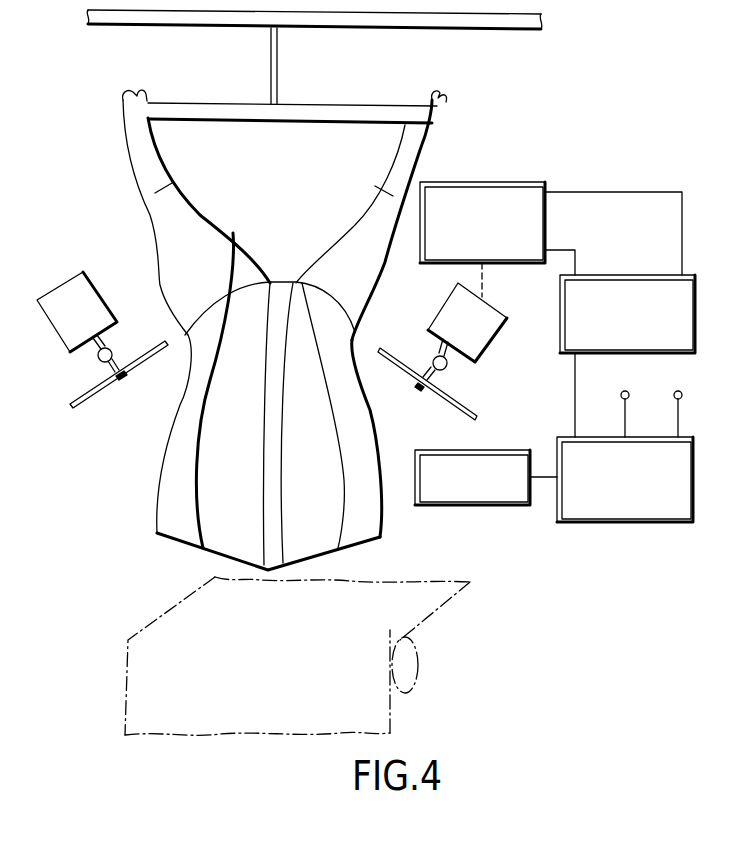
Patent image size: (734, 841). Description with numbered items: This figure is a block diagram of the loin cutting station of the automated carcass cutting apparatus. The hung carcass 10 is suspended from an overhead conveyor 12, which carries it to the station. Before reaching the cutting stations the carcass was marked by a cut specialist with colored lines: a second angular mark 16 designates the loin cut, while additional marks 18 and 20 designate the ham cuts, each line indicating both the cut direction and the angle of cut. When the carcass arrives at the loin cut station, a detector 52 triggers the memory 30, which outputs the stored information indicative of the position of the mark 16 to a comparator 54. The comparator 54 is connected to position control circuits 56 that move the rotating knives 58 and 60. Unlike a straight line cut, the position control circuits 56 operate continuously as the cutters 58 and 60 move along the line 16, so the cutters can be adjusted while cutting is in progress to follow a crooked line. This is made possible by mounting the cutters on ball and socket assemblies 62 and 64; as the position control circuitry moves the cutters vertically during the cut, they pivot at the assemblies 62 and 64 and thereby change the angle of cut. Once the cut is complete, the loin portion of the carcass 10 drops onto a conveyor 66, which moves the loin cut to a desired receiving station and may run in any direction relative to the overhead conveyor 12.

The hung carcass 10 is at (150, 446).
The overhead conveyor 12 is at (338, 22).
The second angular mark 16 is at (285, 330).
The ham cut mark 18 is at (386, 190).
The ham cut mark 20 is at (160, 184).
The memory 30 is at (612, 523).
The detector 52 is at (474, 505).
The comparator 54 is at (628, 276).
The position control circuits 56 is at (498, 182).
The rotating knife 58 is at (432, 401).
The rotating knife 60 is at (100, 390).
The ball and socket assembly 62 is at (450, 373).
The ball and socket assembly 64 is at (100, 360).
The conveyor 66 is at (296, 628).